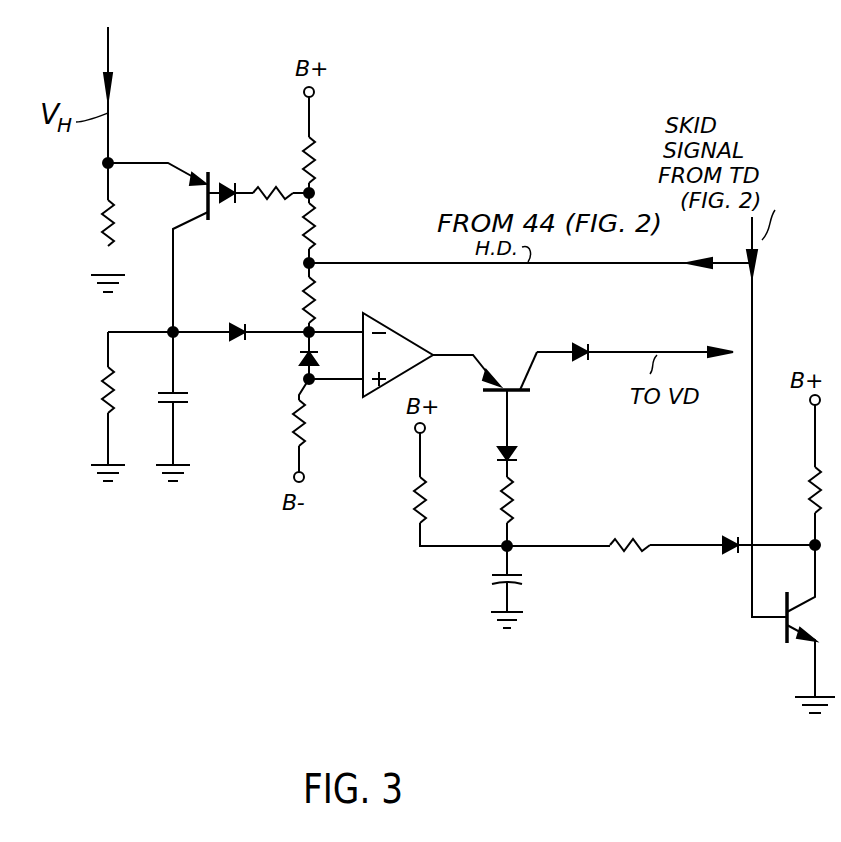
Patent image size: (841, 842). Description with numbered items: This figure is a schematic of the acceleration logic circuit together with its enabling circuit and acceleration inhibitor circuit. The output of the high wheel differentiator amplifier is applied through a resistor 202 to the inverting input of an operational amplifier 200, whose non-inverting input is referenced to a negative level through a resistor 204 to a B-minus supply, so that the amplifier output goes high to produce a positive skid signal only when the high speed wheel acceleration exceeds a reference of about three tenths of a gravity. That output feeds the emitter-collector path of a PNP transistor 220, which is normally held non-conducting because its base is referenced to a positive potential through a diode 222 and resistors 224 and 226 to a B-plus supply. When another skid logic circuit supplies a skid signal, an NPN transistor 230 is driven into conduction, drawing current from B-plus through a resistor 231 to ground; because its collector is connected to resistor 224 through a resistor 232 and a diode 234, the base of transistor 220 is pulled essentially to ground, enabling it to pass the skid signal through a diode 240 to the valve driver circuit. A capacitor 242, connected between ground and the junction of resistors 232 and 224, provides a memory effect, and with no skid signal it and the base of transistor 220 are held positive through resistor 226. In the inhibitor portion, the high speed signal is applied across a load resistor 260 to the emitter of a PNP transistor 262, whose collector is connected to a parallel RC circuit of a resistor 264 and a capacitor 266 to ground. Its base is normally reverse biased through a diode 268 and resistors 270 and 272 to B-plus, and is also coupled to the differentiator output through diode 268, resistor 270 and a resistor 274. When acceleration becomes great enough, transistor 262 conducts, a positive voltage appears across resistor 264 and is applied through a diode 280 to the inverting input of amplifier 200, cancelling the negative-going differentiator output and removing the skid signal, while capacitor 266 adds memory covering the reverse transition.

The operational amplifier 200 is at (440, 328).
The resistor 202 is at (318, 302).
The resistor 204 is at (294, 420).
The PNP transistor 220 is at (510, 360).
The diode 222 is at (496, 457).
The resistor 224 is at (514, 502).
The resistor 226 is at (416, 507).
The NPN transistor 230 is at (785, 636).
The resistor 231 is at (809, 478).
The resistor 232 is at (632, 540).
The diode 234 is at (743, 555).
The diode 240 is at (588, 344).
The capacitor 242 is at (496, 578).
The load resistor 260 is at (106, 215).
The PNP transistor 262 is at (198, 194).
The resistor 264 is at (104, 385).
The capacitor 266 is at (186, 403).
The diode 268 is at (255, 168).
The resistor 270 is at (275, 208).
The resistor 272 is at (317, 170).
The resistor 274 is at (317, 222).
The diode 280 is at (268, 290).